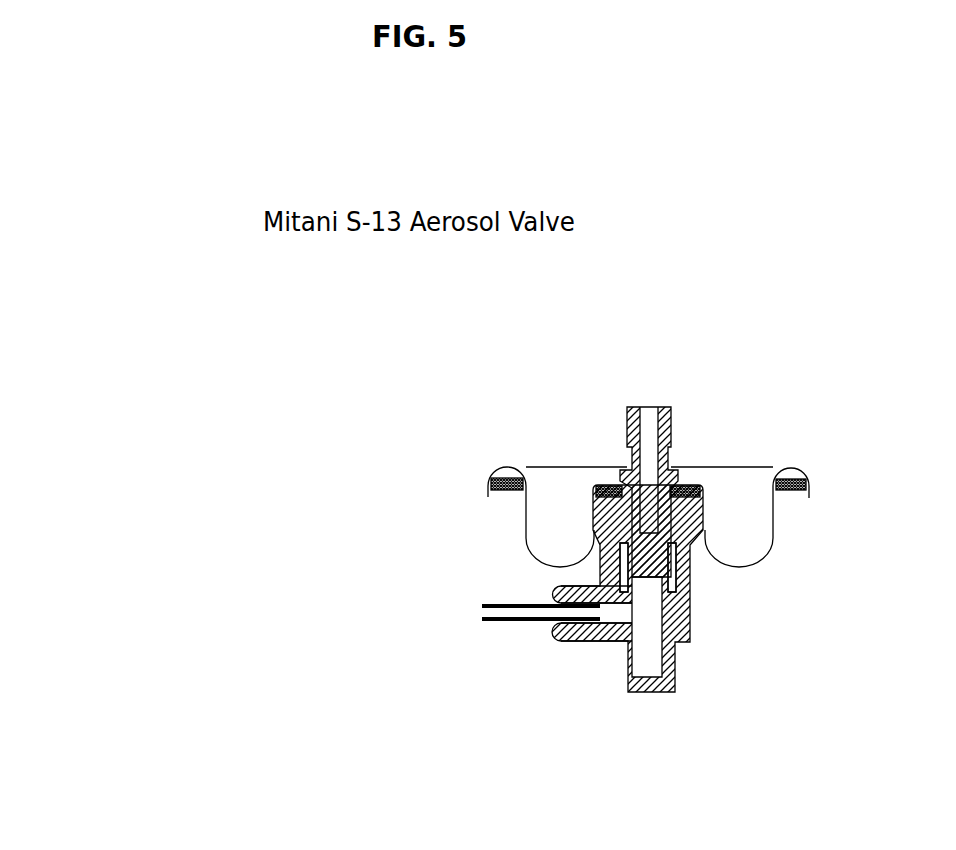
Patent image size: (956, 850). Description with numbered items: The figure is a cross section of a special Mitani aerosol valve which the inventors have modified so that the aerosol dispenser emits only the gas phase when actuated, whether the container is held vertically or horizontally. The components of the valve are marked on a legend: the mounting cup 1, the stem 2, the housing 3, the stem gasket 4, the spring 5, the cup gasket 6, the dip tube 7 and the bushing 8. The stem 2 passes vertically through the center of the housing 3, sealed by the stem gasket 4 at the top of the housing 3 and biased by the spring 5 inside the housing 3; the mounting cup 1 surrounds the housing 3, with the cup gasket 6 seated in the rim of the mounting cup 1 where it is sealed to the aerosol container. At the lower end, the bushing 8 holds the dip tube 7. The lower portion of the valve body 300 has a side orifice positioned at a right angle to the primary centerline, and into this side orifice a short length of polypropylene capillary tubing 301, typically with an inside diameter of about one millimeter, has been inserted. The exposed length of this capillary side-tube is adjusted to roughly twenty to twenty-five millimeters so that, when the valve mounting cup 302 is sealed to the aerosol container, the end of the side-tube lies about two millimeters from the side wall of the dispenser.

The mounting cup 1 is at (507, 468).
The stem 2 is at (627, 430).
The housing 3 is at (600, 545).
The stem gasket 4 is at (593, 488).
The spring 5 is at (607, 580).
The cup gasket 6 is at (474, 665).
The dip tube 7 is at (545, 623).
The bushing 8 is at (562, 641).
The lower portion of the valve body 300 is at (727, 628).
The polypropylene capillary tubing 301 is at (473, 653).
The valve mounting cup 302 is at (810, 531).